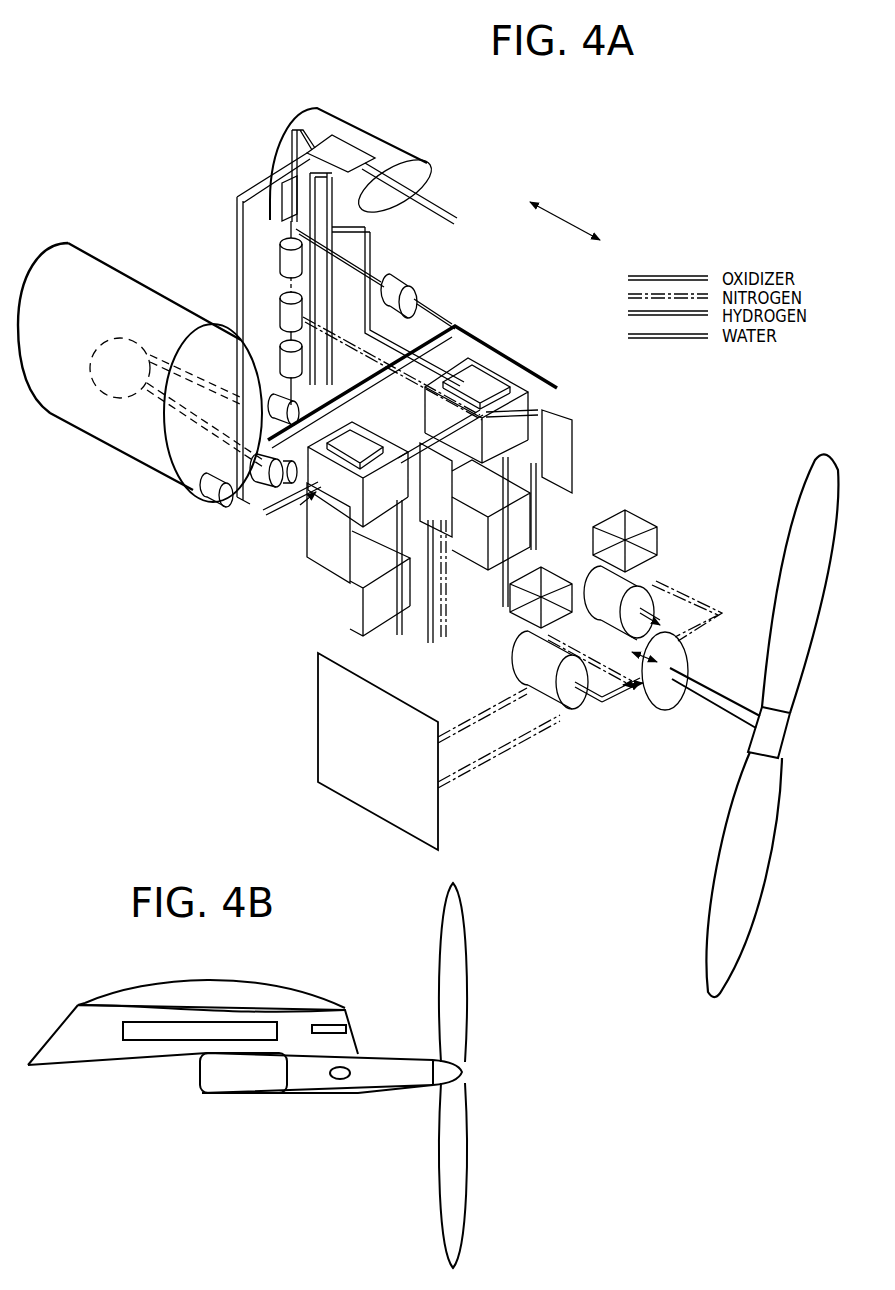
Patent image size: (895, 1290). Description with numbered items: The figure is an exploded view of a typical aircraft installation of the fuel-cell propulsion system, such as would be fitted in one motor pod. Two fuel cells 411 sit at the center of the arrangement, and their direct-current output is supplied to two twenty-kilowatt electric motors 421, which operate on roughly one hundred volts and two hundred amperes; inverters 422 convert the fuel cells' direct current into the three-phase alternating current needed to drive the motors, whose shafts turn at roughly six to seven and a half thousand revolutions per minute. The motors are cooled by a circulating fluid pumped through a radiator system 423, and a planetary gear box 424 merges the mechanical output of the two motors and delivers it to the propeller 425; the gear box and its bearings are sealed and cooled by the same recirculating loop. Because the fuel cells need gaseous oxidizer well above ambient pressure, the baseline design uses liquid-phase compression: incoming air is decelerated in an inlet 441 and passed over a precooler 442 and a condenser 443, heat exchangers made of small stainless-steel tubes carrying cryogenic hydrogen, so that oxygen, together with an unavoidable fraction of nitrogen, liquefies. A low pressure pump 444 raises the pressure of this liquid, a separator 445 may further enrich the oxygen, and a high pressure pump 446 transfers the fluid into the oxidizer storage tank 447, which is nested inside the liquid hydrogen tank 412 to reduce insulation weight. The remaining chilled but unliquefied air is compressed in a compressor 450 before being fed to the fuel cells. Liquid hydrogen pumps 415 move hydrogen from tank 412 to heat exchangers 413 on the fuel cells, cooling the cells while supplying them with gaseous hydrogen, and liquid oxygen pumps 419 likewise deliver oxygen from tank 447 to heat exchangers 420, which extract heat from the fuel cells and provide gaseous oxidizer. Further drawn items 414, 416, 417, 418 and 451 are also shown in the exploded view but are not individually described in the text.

The fuel cells 411 is at (512, 410).
The liquid hydrogen tank 412 is at (86, 406).
The heat exchangers 413 is at (478, 385).
The connecting pipe 414 is at (397, 455).
The liquid hydrogen pumps 415 is at (266, 412).
The pipe 416 is at (283, 522).
The pin 417 is at (464, 566).
The pin 418 is at (474, 564).
The liquid oxygen pumps 419 is at (249, 467).
The heat exchangers 420 is at (333, 538).
The electric motors 421 is at (608, 596).
The inverters 422 is at (488, 541).
The radiator system 423 is at (352, 745).
The planetary gear box 424 is at (660, 695).
The propeller 425 is at (742, 858).
The inlet 441 is at (418, 183).
The precooler 442 is at (345, 150).
The condenser 443 is at (266, 188).
The low pressure pump 444 is at (274, 258).
The separator 445 is at (274, 312).
The high pressure pump 446 is at (280, 372).
The oxidizer storage tank 447 is at (176, 402).
The compressor 450 is at (387, 284).
The junction box 451 is at (646, 542).